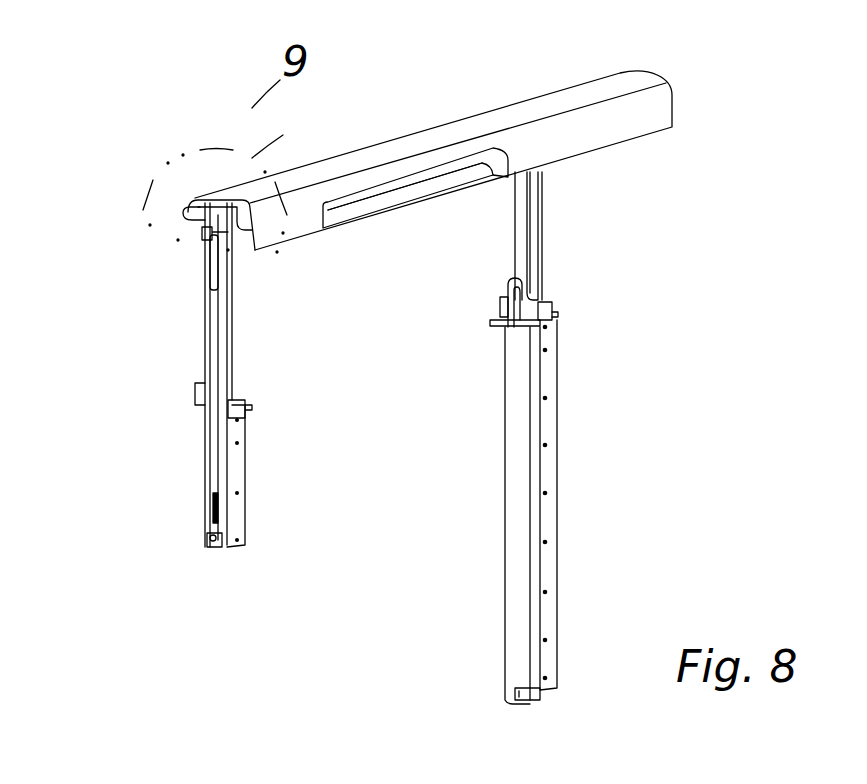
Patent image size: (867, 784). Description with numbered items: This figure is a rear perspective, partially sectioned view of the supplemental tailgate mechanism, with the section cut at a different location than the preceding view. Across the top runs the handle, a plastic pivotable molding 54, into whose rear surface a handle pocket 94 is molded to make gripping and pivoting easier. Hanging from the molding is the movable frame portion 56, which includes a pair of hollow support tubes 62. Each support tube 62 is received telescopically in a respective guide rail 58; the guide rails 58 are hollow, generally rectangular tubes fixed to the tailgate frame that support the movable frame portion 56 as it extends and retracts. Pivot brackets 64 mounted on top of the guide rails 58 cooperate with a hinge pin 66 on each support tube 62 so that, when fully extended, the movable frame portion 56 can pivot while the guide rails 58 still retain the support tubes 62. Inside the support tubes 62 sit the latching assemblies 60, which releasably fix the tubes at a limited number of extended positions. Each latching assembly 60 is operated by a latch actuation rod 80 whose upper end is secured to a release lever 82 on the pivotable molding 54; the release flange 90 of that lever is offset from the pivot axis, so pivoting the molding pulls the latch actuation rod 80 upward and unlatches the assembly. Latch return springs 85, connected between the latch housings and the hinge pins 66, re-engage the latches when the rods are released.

The pivotable molding 54 is at (379, 180).
The movable frame portion 56 is at (595, 173).
The guide rails 58 is at (557, 497).
The latching assemblies 60 is at (144, 392).
The support tubes 62 is at (545, 233).
The pivot brackets 64 is at (545, 288).
The hinge pin 66 is at (217, 537).
The latch actuation rods 80 is at (200, 262).
The release levers 82 is at (190, 212).
The latch return springs 85 is at (215, 512).
The release flange 90 is at (200, 237).
The handle pocket 94 is at (350, 220).